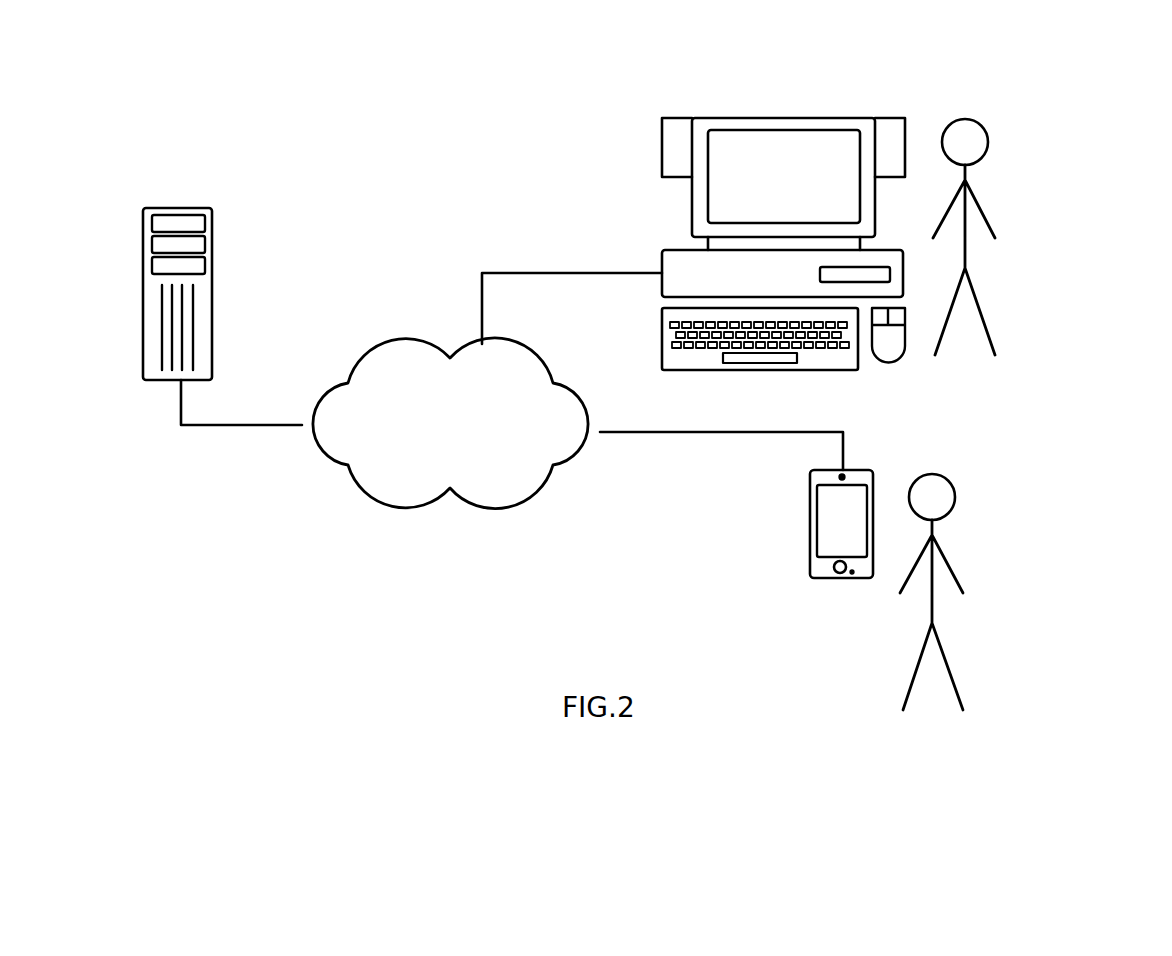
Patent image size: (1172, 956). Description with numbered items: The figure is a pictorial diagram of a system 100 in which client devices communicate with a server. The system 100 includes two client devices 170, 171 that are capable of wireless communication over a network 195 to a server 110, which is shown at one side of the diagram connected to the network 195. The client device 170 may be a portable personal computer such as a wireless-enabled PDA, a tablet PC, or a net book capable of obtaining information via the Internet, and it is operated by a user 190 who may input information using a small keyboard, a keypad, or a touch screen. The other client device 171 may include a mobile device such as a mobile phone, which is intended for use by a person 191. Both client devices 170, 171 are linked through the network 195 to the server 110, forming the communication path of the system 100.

The system 100 is at (1146, 20).
The server 110 is at (145, 218).
The network 195 is at (437, 348).
The client device 170 is at (690, 205).
The client device 171 is at (812, 485).
The user 190 is at (1000, 238).
The person 191 is at (965, 592).